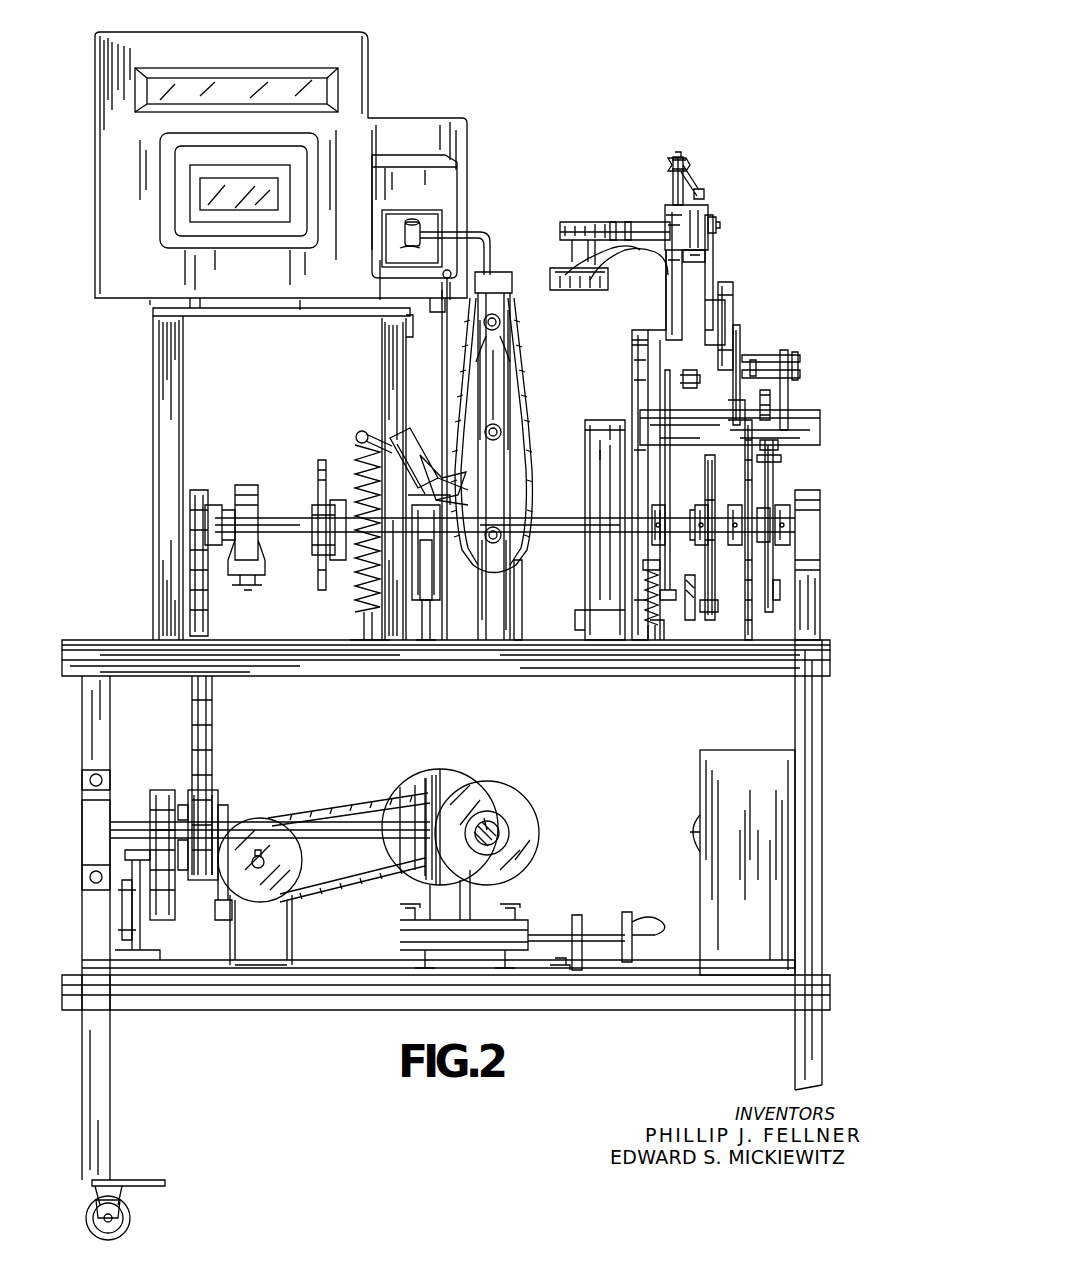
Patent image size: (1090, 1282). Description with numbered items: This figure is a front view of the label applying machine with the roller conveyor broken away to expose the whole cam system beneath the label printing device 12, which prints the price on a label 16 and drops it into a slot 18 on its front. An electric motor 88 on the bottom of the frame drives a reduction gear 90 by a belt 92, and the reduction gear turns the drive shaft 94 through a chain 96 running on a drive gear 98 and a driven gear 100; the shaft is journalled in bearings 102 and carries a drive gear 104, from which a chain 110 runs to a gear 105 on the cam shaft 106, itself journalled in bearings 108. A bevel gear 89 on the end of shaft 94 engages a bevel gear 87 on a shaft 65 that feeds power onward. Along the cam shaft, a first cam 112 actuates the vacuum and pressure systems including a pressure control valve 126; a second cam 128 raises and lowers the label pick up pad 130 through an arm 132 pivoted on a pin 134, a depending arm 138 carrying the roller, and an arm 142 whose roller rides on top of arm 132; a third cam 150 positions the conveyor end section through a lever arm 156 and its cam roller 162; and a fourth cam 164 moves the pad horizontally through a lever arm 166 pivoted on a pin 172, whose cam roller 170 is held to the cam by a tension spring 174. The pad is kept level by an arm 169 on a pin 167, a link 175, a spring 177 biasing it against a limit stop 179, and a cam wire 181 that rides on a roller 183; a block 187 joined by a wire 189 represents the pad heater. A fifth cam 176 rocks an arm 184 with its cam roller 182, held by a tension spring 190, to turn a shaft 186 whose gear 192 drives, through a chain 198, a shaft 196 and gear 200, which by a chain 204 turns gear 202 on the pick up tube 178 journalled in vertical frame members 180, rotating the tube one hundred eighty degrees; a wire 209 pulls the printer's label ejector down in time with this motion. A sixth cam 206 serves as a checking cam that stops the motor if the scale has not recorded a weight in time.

The label printing device 12 is at (382, 66).
The label 16 is at (402, 236).
The slot 18 is at (420, 182).
The shaft 65 is at (492, 826).
The bevel gear 87 is at (535, 810).
The electric motor 88 is at (466, 772).
The bevel gear 89 is at (428, 778).
The reduction gear 90 is at (240, 855).
The belt 92 is at (345, 812).
The drive shaft 94 is at (315, 830).
The chain 96 is at (192, 872).
The drive gear 98 is at (175, 880).
The driven gear 100 is at (165, 792).
The bearings 102 is at (90, 810).
The drive gear 104 is at (218, 800).
The gear 105 is at (210, 495).
The cam shaft 106 is at (290, 534).
The bearings 108 is at (245, 485).
The chain 110 is at (215, 740).
The first cam 112 is at (776, 607).
The pressure control valve 126 is at (782, 412).
The second cam 128 is at (746, 625).
The label pick up pad 130 is at (565, 275).
The arm 132 is at (733, 292).
The pin 134 is at (770, 358).
The arm 138 is at (740, 345).
The arm 142 is at (714, 268).
The third cam 150 is at (704, 508).
The lever arm 156 is at (690, 622).
The cam roller 162 is at (715, 625).
The fourth cam 164 is at (712, 466).
The lever arm 166 is at (630, 385).
The pin 167 is at (716, 220).
The arm 169 is at (618, 290).
The cam roller 170 is at (426, 602).
The pin 172 is at (628, 420).
The tension spring 174 is at (643, 612).
The link 175 is at (668, 166).
The fifth cam 176 is at (440, 560).
The spring 177 is at (700, 182).
The pick up tube 178 is at (485, 232).
The limit stop 179 is at (706, 245).
The vertical frame members 180 is at (520, 585).
The cam wire 181 is at (668, 286).
The cam roller 182 is at (422, 440).
The roller 183 is at (690, 372).
The arm 184 is at (362, 430).
The shaft 186 is at (493, 544).
The block 187 is at (612, 224).
The wire 189 is at (598, 283).
The tension spring 190 is at (362, 603).
The gear 192 is at (520, 548).
The shaft 196 is at (493, 441).
The chain 198 is at (530, 492).
The gear 200 is at (512, 432).
The gear 202 is at (500, 320).
The chain 204 is at (528, 395).
The sixth cam 206 is at (320, 462).
The wire 209 is at (436, 366).